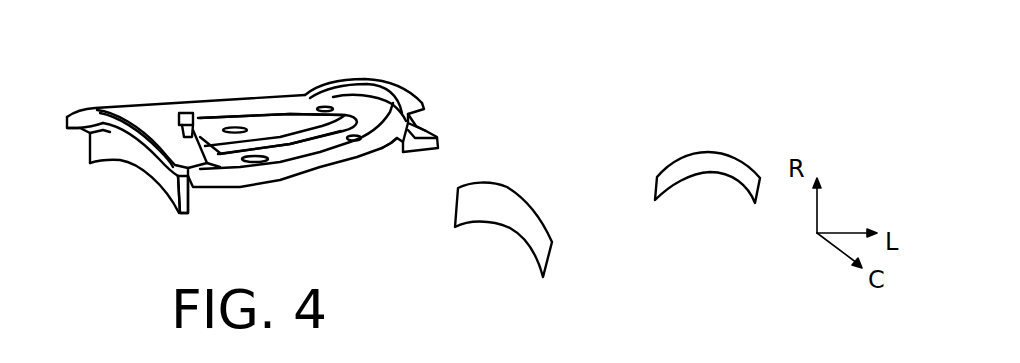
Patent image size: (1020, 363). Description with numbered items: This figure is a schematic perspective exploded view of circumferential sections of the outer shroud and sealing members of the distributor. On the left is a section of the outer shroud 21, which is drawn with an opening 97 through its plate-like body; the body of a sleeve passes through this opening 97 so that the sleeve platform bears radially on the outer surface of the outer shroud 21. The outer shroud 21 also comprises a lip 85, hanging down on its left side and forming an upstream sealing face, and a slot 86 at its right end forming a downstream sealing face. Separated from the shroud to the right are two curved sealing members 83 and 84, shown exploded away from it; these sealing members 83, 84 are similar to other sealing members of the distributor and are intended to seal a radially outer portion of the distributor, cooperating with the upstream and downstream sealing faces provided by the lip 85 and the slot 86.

The outer shroud 21 is at (194, 90).
The opening 97 is at (290, 137).
The sealing member 83 is at (520, 210).
The sealing member 84 is at (722, 163).
The lip 85 is at (189, 208).
The slot 86 is at (384, 146).